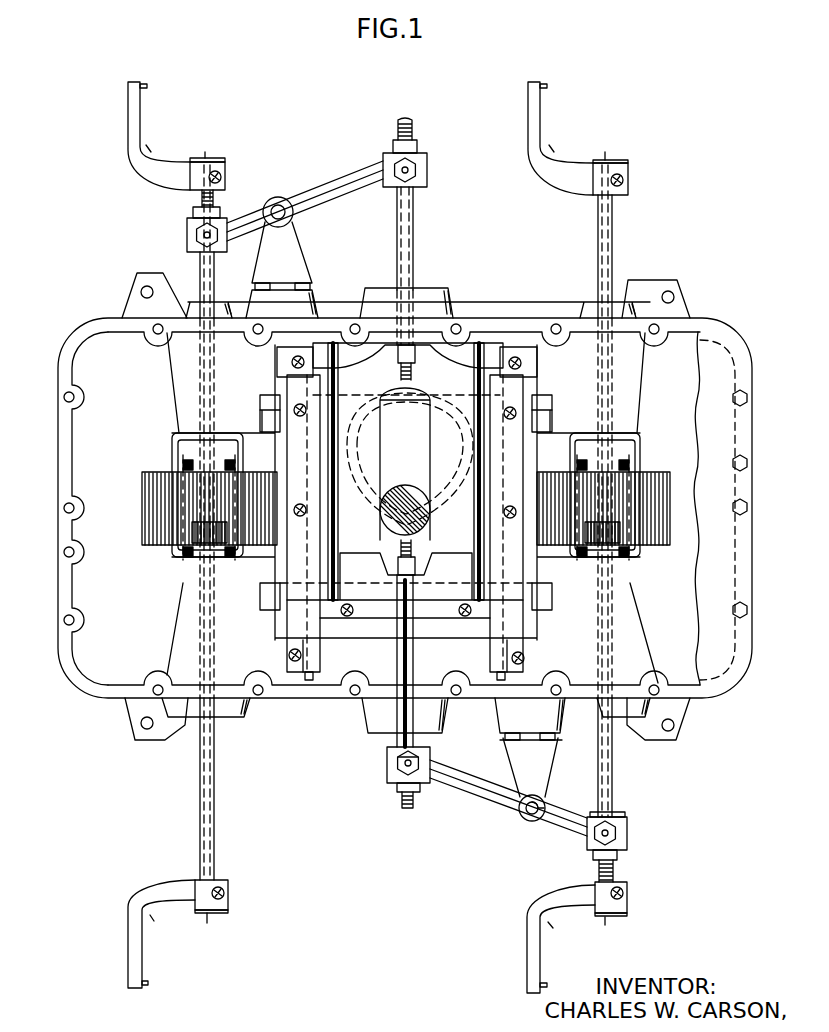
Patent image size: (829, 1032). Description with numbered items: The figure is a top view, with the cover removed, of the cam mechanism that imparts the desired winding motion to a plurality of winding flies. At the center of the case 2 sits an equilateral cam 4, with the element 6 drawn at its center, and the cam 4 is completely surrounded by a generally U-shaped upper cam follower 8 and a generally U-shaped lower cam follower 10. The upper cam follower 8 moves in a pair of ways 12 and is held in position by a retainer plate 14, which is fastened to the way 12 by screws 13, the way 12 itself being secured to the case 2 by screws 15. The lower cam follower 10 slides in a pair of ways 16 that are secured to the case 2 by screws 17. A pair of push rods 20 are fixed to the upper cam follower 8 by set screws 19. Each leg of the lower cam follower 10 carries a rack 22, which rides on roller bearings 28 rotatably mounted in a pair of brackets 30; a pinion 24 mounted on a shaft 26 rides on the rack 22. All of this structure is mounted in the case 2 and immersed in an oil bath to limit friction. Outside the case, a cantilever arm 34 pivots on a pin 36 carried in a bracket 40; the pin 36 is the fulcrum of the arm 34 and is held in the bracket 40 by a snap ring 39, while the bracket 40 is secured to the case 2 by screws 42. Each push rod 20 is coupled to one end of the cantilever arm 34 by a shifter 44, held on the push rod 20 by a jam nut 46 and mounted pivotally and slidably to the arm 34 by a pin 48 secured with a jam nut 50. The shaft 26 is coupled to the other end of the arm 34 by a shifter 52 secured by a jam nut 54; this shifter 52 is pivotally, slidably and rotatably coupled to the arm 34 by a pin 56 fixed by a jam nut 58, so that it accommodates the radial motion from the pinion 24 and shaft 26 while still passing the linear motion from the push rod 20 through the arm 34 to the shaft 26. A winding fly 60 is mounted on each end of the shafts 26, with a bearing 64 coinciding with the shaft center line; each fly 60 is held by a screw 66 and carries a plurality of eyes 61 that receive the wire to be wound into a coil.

The case 2 is at (80, 675).
The equilateral cam 4 is at (408, 405).
The ball 6 is at (405, 495).
The upper cam follower 8 is at (446, 374).
The lower cam follower 10 is at (378, 600).
The ways 12 is at (289, 657).
The screws 13 is at (297, 405).
The retainer plate 14 is at (290, 640).
The screws 15 is at (291, 362).
The ways 16 is at (260, 408).
The screws 17 is at (347, 617).
The set screws 19 is at (396, 352).
The push rods 20 is at (415, 247).
The rack 22 is at (192, 540).
The pinion 24 is at (195, 535).
The shaft 26 is at (198, 262).
The roller bearings 28 is at (183, 465).
The brackets 30 is at (175, 440).
The cantilever arm 34 is at (477, 800).
The pin 36 is at (535, 820).
The snap ring 39 is at (527, 814).
The bracket 40 is at (300, 243).
The screws 42 is at (297, 283).
The shifter 44 is at (428, 172).
The jam nut 46 is at (418, 147).
The pin 48 is at (422, 756).
The jam nut 50 is at (386, 765).
The shifter 52 is at (626, 814).
The jam nut 54 is at (618, 856).
The pin 56 is at (628, 838).
The jam nut 58 is at (622, 830).
The winding fly 60 is at (127, 126).
The eyes 61 is at (203, 152).
The bearing 64 is at (610, 921).
The screw 66 is at (628, 893).